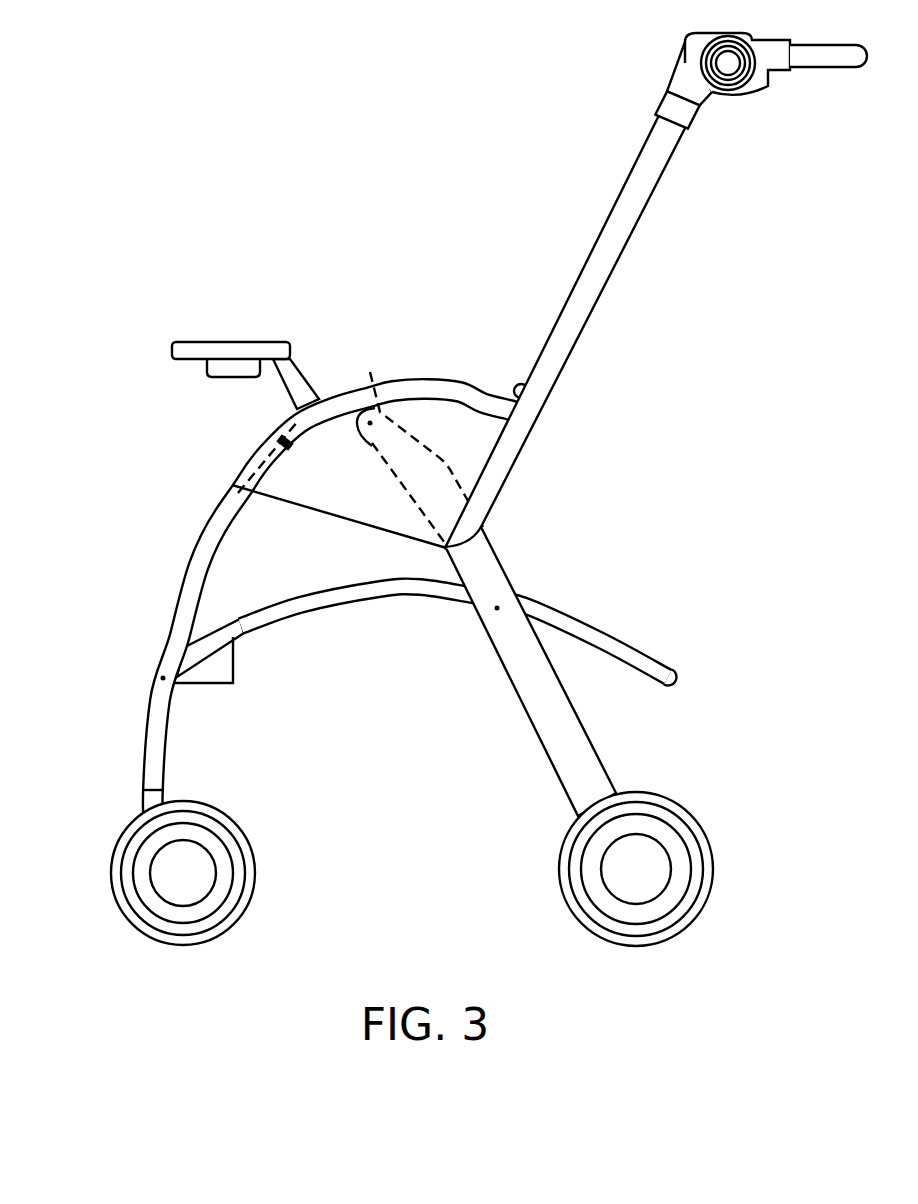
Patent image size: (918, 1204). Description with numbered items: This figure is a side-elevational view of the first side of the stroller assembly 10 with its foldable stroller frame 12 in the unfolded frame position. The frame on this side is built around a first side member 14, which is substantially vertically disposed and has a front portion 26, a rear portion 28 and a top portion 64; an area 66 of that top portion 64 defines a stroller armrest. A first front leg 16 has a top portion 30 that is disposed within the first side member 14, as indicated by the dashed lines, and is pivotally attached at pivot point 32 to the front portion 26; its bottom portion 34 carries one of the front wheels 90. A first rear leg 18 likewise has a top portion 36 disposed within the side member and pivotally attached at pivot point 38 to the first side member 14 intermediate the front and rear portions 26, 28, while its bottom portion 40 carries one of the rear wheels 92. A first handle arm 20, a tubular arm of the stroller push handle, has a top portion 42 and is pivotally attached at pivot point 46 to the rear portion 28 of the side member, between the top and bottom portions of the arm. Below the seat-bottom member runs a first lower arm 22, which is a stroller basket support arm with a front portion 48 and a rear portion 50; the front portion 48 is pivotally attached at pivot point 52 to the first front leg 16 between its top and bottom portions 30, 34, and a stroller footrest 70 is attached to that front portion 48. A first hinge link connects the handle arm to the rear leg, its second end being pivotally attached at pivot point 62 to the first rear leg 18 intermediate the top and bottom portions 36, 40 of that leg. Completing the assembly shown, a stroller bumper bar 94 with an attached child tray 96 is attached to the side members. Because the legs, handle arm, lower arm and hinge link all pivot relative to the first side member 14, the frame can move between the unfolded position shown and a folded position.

The stroller assembly 10 is at (198, 160).
The stroller frame 12 is at (160, 567).
The first side member 14 is at (458, 418).
The first front leg 16 is at (168, 632).
The first rear leg 18 is at (535, 705).
The first handle arm 20 is at (656, 424).
The first lower arm 22 is at (377, 598).
The front portion of the first side member 26 is at (238, 477).
The rear portion of the first side member 28 is at (530, 440).
The top portion of the first front leg 30 is at (262, 452).
The pivot point 32 is at (287, 445).
The bottom portion of the first front leg 34 is at (142, 800).
The top portion of the first rear leg 36 is at (372, 380).
The pivot point 38 is at (370, 426).
The bottom portion of the first rear leg 40 is at (563, 776).
The top portion of the first handle arm 42 is at (690, 128).
The pivot point 46 is at (533, 398).
The front portion of the first lower arm 48 is at (242, 633).
The rear portion of the first lower arm 50 is at (612, 632).
The pivot point 52 is at (161, 678).
The pivot point 62 is at (497, 606).
The top portion of the first side member 64 is at (344, 392).
The area defining a stroller armrest 66 is at (420, 378).
The stroller footrest 70 is at (212, 684).
The front wheels 90 is at (110, 873).
The rear wheels 92 is at (714, 868).
The stroller bumper bar 94 is at (287, 381).
The child tray 96 is at (222, 342).